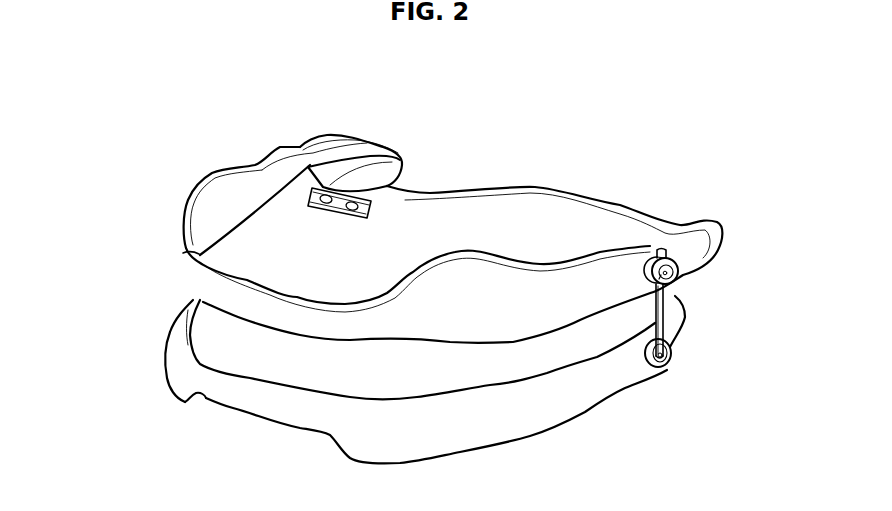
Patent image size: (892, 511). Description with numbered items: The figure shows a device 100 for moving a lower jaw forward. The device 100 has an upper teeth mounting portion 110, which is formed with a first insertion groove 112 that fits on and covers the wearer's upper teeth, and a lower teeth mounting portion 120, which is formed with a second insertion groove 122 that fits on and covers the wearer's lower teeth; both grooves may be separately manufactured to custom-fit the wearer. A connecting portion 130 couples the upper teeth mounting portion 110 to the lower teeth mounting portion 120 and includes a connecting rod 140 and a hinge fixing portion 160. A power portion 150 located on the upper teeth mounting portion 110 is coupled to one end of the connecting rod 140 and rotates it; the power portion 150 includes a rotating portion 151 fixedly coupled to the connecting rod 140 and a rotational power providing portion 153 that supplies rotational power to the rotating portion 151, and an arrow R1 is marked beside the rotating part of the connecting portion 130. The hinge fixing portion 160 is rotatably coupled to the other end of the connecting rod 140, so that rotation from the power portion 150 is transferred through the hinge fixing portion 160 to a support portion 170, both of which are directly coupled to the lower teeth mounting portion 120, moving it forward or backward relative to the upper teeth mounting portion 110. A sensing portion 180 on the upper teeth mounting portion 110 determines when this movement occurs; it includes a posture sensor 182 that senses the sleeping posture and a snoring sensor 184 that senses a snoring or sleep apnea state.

The device 100 is at (92, 72).
The upper teeth mounting portion 110 is at (201, 173).
The first insertion groove 112 is at (193, 257).
The lower teeth mounting portion 120 is at (160, 378).
The second insertion groove 122 is at (201, 396).
The connecting portion 130 is at (705, 257).
The connecting rod 140 is at (665, 297).
The power portion 150 is at (713, 154).
The rotating portion 151 is at (665, 257).
The rotational power providing portion 153 is at (657, 251).
The hinge fixing portion 160 is at (671, 350).
The support portion 170 is at (662, 359).
The sensing portion 180 is at (403, 155).
The posture sensor 182 is at (267, 153).
The snoring sensor 184 is at (390, 190).
The rotation direction R1 is at (684, 265).